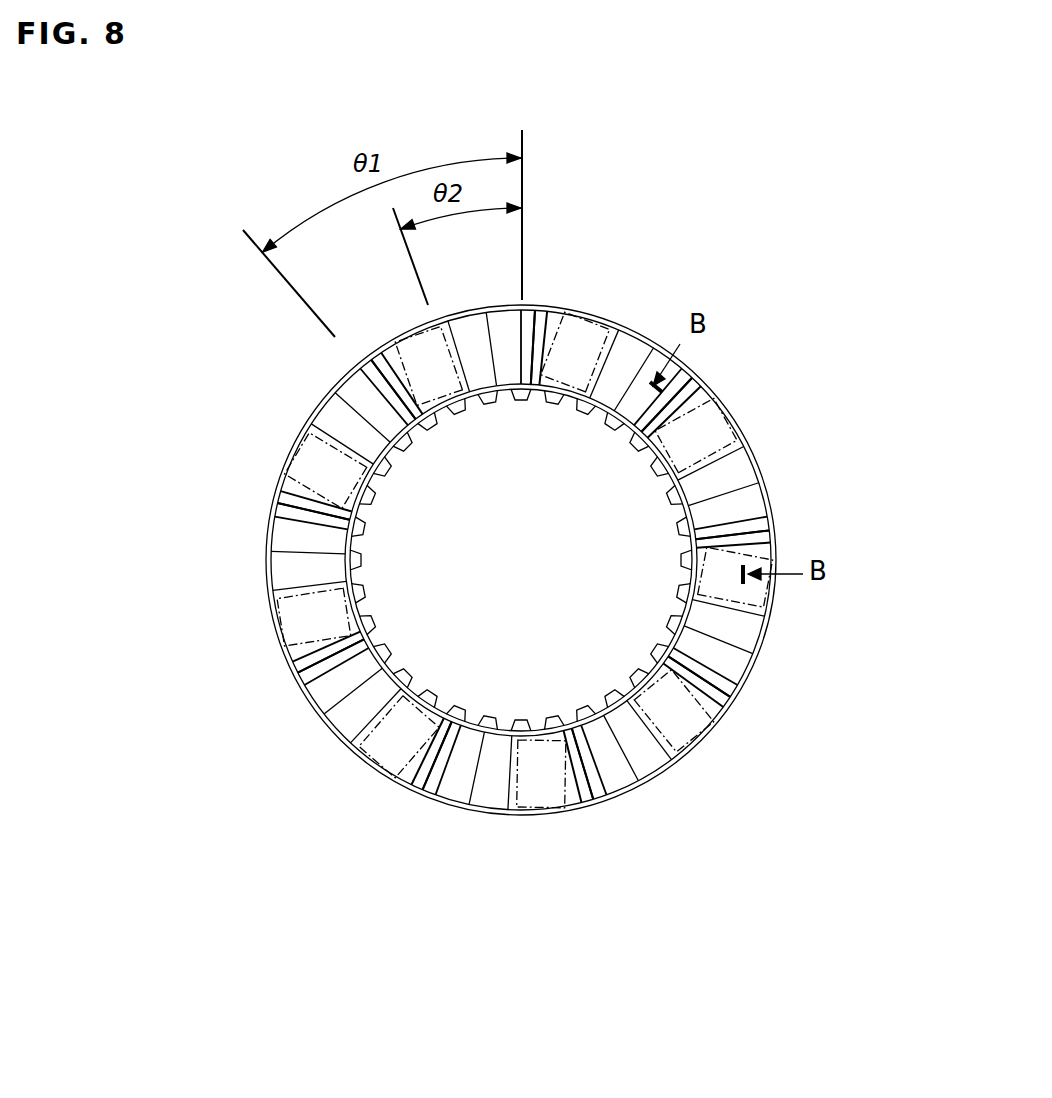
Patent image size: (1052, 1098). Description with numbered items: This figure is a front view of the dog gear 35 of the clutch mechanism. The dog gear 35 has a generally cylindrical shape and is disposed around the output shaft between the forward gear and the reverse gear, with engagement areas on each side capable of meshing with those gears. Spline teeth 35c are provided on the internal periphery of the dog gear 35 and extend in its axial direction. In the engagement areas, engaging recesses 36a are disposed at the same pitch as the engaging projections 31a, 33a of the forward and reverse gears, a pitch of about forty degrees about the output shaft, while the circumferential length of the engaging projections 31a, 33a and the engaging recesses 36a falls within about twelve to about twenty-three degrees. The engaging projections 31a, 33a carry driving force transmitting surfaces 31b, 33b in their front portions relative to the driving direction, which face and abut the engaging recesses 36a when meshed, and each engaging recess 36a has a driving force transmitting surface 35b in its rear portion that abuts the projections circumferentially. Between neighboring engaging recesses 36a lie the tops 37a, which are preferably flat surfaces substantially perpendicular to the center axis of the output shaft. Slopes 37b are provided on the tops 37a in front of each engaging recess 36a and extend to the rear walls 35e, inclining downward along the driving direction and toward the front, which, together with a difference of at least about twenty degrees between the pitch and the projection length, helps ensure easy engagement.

The dog gear 35 is at (630, 292).
The driving force transmitting surface 35b is at (390, 358).
The spline teeth 35c is at (372, 540).
The rear wall 35e is at (663, 381).
The engaging recess 36a is at (326, 462).
The top 37a is at (542, 322).
The slope 37b is at (478, 325).
The engaging projection 31a is at (525, 533).
The engaging projection 33a is at (392, 334).
The driving force transmitting surface 31b is at (454, 471).
The driving force transmitting surface 33b is at (404, 407).